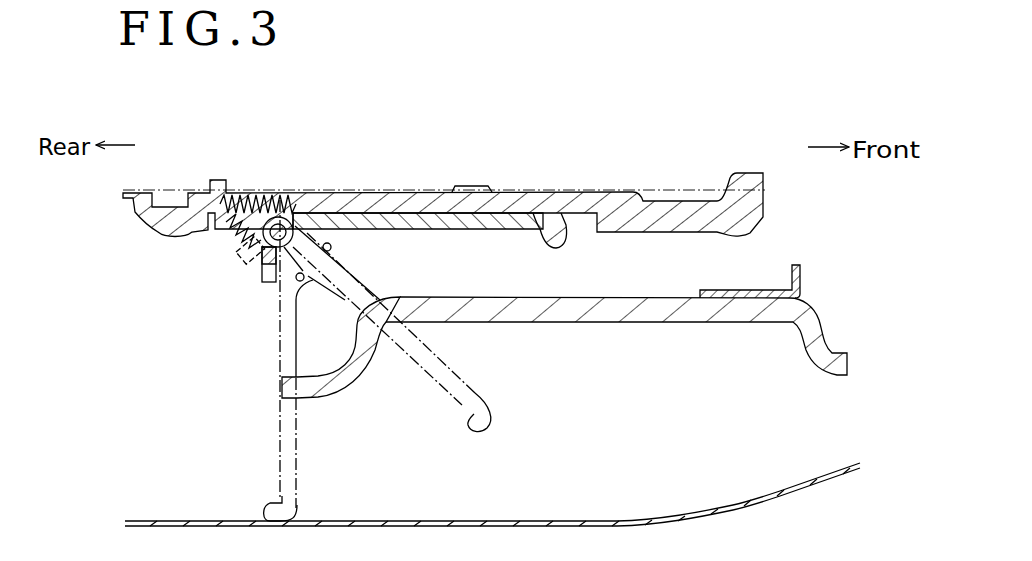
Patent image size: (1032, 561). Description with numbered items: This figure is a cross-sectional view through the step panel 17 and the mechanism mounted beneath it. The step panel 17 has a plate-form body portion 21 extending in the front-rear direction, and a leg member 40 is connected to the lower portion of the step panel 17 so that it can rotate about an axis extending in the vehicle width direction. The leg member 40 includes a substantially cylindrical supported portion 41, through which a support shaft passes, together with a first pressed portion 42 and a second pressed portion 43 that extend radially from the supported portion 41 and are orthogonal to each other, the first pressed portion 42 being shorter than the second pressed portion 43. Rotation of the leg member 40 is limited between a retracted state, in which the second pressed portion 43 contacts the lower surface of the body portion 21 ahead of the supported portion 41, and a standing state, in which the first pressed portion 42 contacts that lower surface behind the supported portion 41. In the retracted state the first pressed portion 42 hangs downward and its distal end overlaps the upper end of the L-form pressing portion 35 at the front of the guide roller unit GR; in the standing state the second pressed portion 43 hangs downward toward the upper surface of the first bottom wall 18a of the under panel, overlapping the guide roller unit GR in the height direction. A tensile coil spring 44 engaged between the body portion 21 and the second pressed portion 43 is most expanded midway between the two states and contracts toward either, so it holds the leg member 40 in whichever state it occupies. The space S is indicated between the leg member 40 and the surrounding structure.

The step panel 17 is at (613, 183).
The body portion 21 is at (470, 191).
The leg member 40 is at (478, 232).
The second pressed portion 43 is at (529, 210).
The supported portion 41 is at (300, 196).
The first pressed portion 42 is at (249, 192).
The tensile coil spring 44 is at (273, 190).
The guide roller unit GR is at (649, 325).
The pressing portion 35 is at (790, 270).
The space S is at (394, 443).
The first bottom wall 18a is at (515, 519).